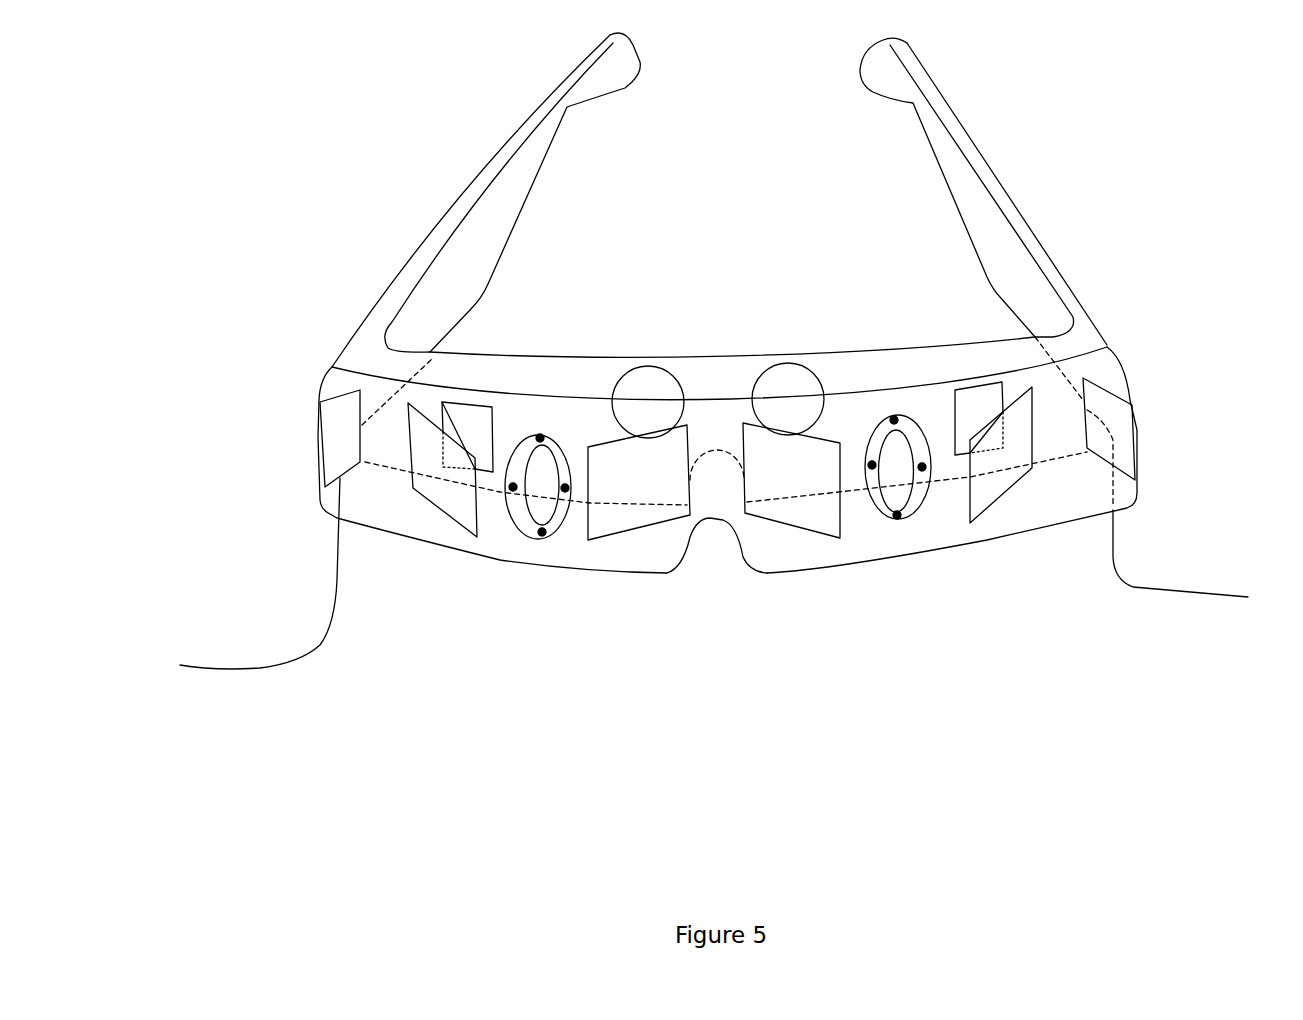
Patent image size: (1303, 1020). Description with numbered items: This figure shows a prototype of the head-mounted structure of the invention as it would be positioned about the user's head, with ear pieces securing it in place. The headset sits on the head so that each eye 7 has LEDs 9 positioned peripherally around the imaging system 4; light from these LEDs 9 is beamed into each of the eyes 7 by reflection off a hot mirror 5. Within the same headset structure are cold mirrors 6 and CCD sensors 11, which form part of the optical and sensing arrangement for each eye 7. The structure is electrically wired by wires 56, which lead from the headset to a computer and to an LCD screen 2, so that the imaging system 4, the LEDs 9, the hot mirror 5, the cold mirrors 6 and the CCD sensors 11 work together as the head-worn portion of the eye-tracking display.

The LCD screen 2 is at (448, 403).
The imaging system 4 is at (900, 523).
The hot mirror 5 is at (788, 512).
The cold mirror 6 is at (457, 510).
The eye 7 is at (660, 378).
The LED 9 is at (538, 537).
The CCD sensor 11 is at (338, 433).
The wires 56 is at (248, 677).